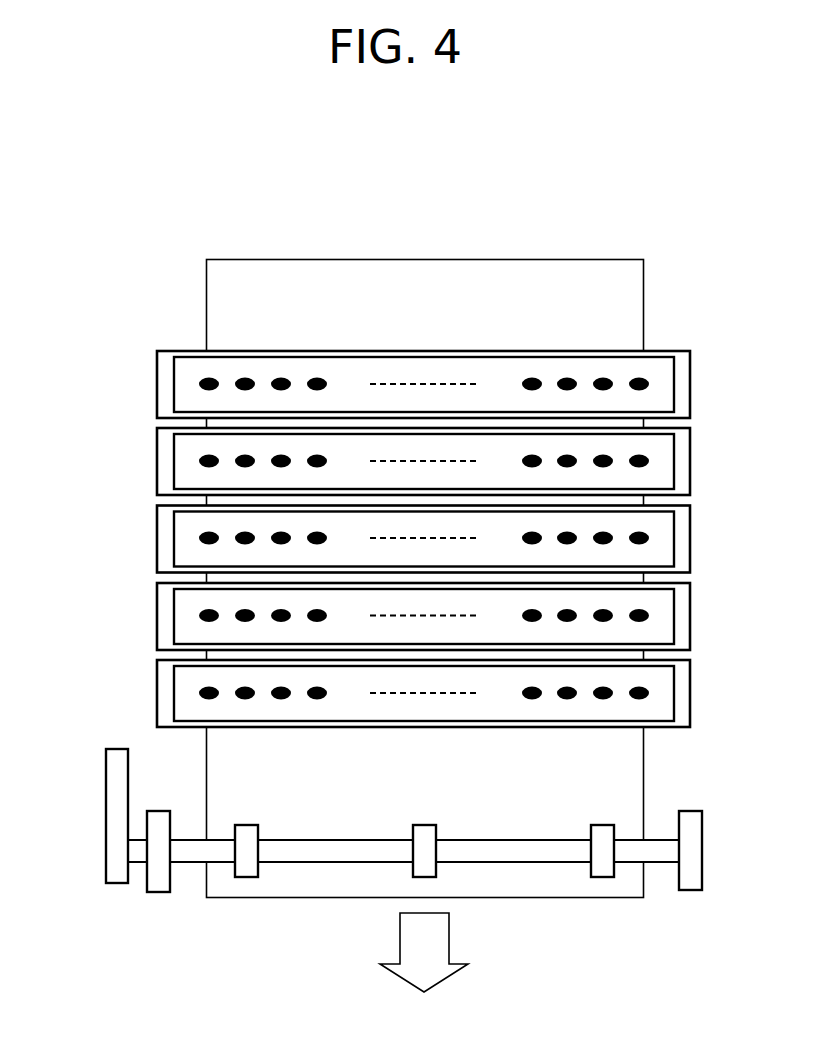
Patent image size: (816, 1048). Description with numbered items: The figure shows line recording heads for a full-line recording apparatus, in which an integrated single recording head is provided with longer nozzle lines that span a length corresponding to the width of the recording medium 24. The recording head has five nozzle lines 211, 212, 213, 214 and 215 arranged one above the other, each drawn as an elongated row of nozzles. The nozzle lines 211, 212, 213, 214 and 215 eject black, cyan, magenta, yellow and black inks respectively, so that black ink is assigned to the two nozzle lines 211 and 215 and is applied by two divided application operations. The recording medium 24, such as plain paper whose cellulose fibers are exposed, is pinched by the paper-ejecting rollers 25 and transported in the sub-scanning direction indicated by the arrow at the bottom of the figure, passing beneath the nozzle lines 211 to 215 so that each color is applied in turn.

The recording medium 24 is at (523, 272).
The nozzle line 211 is at (166, 381).
The nozzle line 212 is at (166, 458).
The nozzle line 213 is at (166, 535).
The nozzle line 214 is at (166, 613).
The nozzle line 215 is at (166, 690).
The paper-ejecting rollers 25 is at (284, 857).